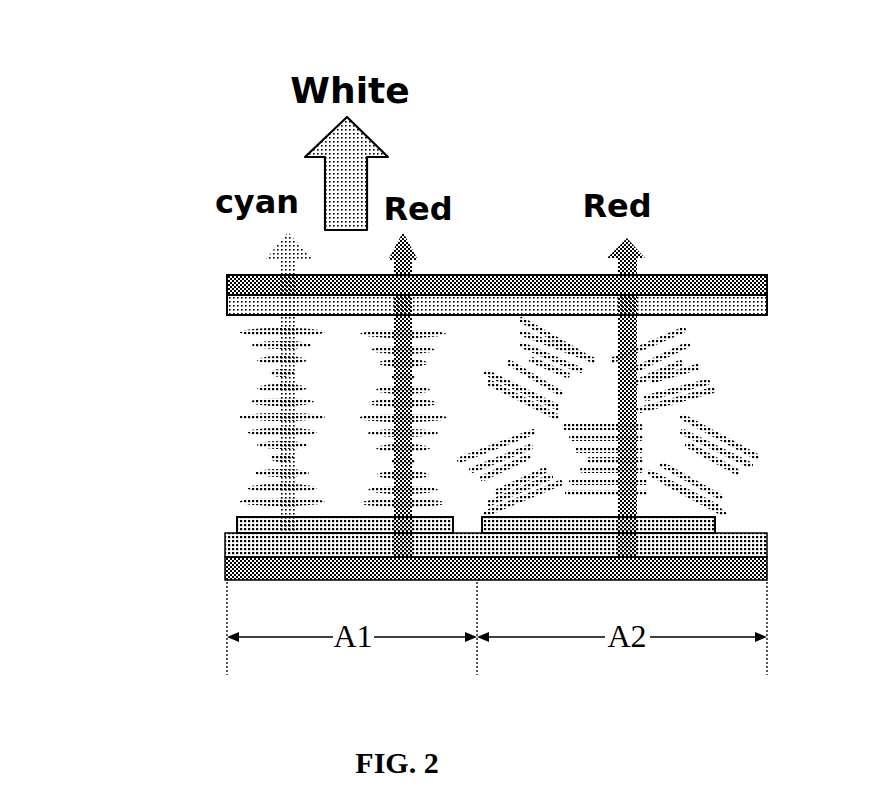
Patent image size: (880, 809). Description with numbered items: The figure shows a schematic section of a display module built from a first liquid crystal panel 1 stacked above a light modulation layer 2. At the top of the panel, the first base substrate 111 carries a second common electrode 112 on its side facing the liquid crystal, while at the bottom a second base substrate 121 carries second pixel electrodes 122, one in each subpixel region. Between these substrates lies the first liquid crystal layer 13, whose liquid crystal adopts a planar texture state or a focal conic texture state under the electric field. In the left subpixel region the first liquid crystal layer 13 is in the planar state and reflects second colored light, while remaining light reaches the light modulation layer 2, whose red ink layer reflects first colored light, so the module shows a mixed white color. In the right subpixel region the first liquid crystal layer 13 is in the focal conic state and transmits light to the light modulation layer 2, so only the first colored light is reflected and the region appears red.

The first liquid crystal panel 1 is at (70, 277).
The first base substrate 111 is at (227, 287).
The second common electrode 112 is at (243, 309).
The first liquid crystal layer 13 is at (285, 445).
The second pixel electrode 122 is at (237, 527).
The second base substrate 121 is at (227, 550).
The light modulation layer 2 is at (227, 570).